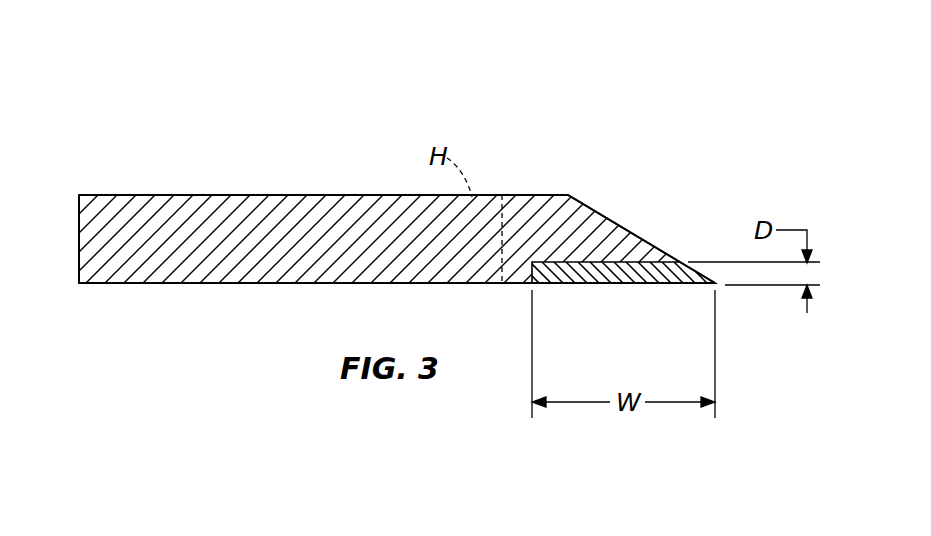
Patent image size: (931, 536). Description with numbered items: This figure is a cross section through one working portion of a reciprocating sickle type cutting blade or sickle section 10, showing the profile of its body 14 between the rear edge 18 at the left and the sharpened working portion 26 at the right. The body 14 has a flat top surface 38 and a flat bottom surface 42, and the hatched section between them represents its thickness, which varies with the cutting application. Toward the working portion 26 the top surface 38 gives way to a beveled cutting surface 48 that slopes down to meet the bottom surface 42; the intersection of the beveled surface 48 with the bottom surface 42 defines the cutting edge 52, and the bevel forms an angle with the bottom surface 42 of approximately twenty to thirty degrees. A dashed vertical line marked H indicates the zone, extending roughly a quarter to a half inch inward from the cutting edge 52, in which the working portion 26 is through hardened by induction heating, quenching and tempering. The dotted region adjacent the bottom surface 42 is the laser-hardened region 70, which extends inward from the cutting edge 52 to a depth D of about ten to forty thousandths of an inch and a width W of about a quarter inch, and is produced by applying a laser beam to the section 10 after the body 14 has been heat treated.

The sickle section 10 is at (638, 127).
The body 14 is at (205, 230).
The rear edge 18 is at (79, 243).
The working portion 26 is at (658, 208).
The top surface 38 is at (360, 195).
The bottom surface 42 is at (257, 284).
The beveled cutting surface 48 is at (590, 206).
The cutting edge 52 is at (714, 285).
The laser-hardened region 70 is at (583, 284).